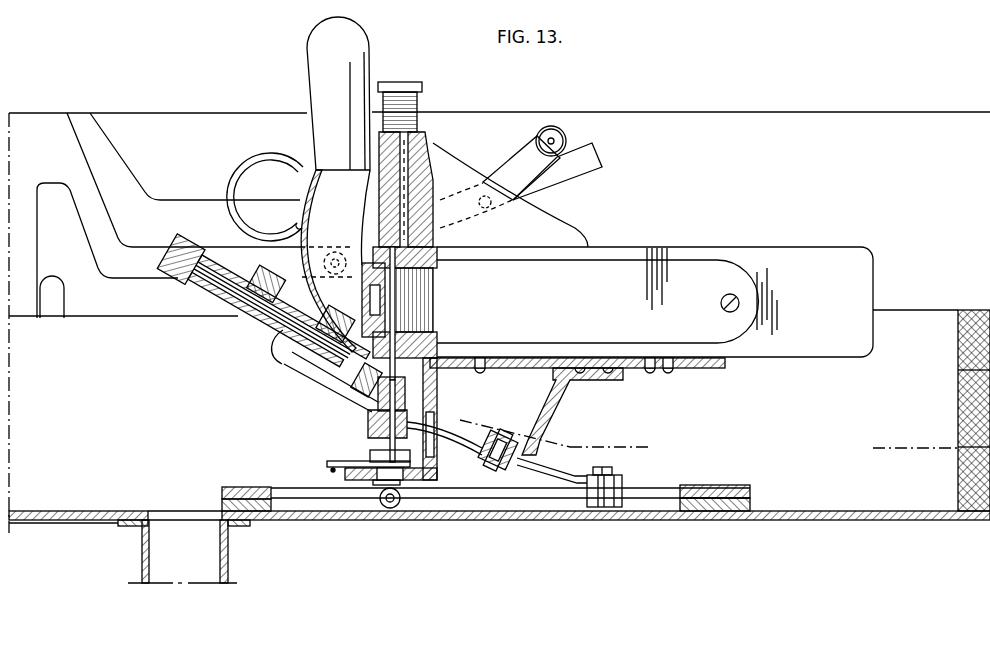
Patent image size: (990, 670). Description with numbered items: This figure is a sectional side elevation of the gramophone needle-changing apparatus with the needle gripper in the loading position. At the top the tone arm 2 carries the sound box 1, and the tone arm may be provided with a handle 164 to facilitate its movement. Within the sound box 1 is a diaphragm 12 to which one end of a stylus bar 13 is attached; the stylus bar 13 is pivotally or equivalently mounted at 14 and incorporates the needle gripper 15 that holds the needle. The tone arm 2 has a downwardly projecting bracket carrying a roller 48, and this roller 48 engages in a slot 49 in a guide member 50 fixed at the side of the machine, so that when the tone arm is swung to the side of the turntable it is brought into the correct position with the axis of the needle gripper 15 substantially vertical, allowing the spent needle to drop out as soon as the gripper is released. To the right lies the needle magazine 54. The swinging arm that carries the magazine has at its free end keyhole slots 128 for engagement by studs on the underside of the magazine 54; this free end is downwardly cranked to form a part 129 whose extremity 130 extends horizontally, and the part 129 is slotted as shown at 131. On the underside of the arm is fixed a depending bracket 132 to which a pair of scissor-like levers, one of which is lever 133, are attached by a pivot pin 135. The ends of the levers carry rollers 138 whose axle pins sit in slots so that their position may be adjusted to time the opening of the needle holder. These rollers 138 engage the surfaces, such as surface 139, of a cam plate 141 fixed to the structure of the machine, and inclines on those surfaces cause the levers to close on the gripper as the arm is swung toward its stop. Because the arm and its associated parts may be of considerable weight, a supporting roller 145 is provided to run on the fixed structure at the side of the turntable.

The sound box 1 is at (180, 262).
The tone arm 2 is at (330, 48).
The diaphragm 12 is at (236, 313).
The stylus bar 13 is at (308, 367).
The pivotal mounting 14 is at (167, 422).
The needle gripper 15 is at (372, 427).
The roller 48 is at (338, 244).
The slot 49 is at (135, 243).
The guide member 50 is at (115, 182).
The needle magazine 54 is at (605, 285).
The keyhole slots 128 is at (503, 360).
The downwardly cranked part 129 is at (437, 395).
The extremity 130 is at (360, 481).
The slot 131 is at (438, 418).
The depending bracket 132 is at (548, 412).
The scissor-like lever 133 is at (554, 480).
The pivot pin 135 is at (482, 462).
The rollers 138 is at (622, 493).
The cam surface 139 is at (510, 493).
The cam plate 141 is at (708, 490).
The supporting roller 145 is at (400, 505).
The handle 164 is at (267, 160).